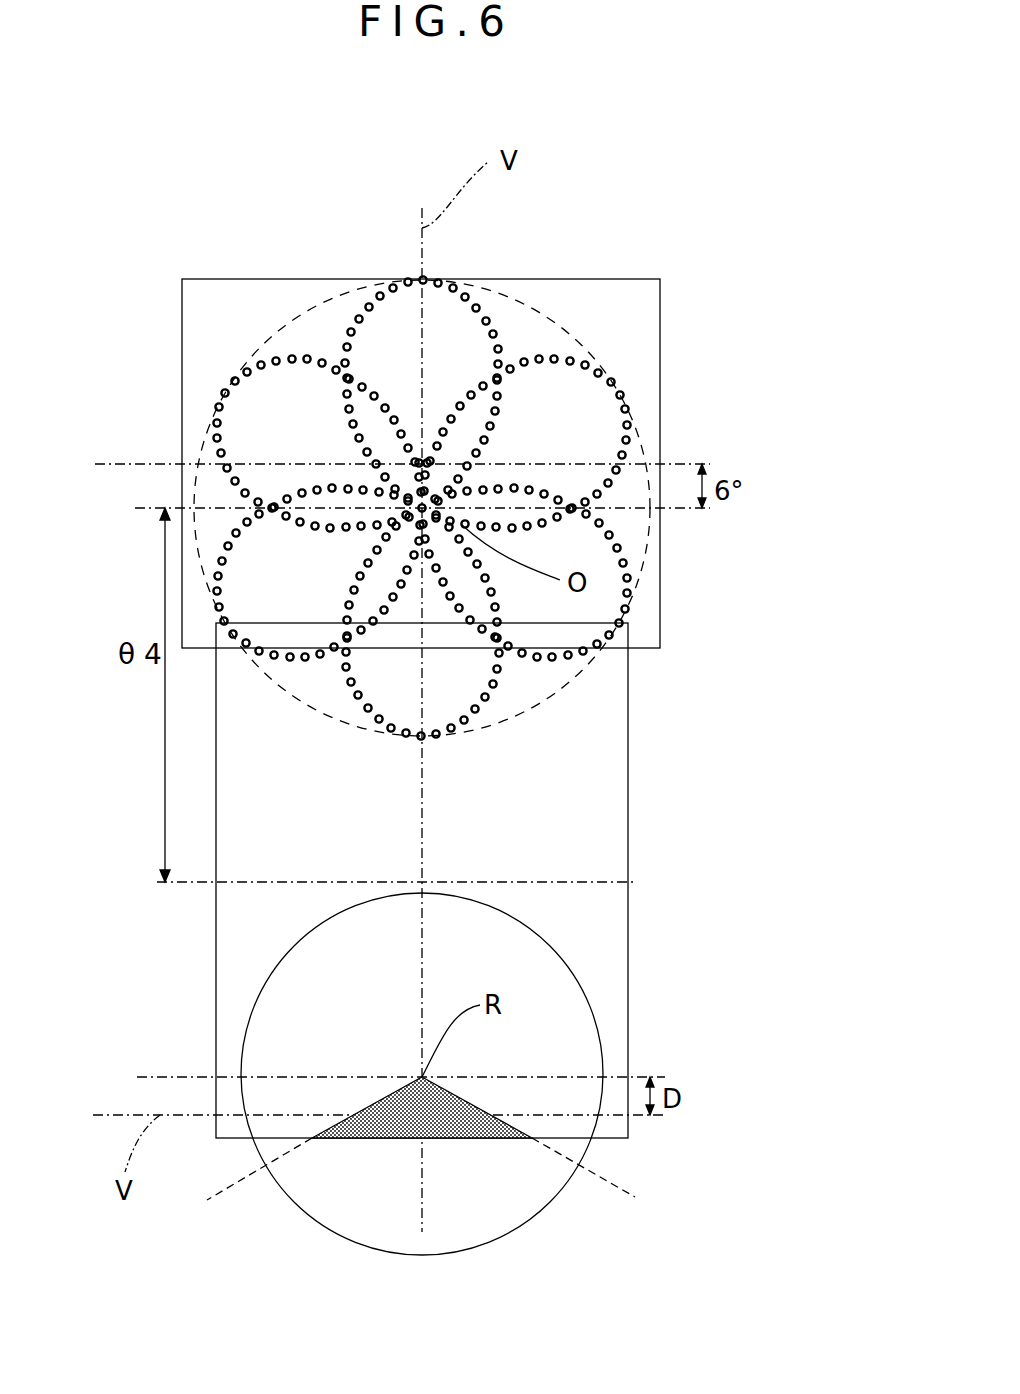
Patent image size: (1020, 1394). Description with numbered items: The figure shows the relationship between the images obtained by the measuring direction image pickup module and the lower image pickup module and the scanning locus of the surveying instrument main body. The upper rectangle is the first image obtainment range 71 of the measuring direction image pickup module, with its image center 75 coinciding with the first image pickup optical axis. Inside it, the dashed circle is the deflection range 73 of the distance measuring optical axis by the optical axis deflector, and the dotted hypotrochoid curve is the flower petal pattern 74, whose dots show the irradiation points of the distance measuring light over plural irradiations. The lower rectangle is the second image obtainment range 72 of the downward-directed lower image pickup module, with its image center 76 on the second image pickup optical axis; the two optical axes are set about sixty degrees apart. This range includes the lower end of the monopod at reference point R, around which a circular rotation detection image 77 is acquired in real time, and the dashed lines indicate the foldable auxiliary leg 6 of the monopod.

The first image obtainment range 71 is at (660, 395).
The second image obtainment range 72 is at (628, 788).
The deflection range 73 is at (288, 322).
The flower petal pattern 74 is at (547, 358).
The image center 75 is at (430, 462).
The image center 76 is at (422, 882).
The rotation detection image 77 is at (585, 998).
The auxiliary leg 6 is at (635, 1192).